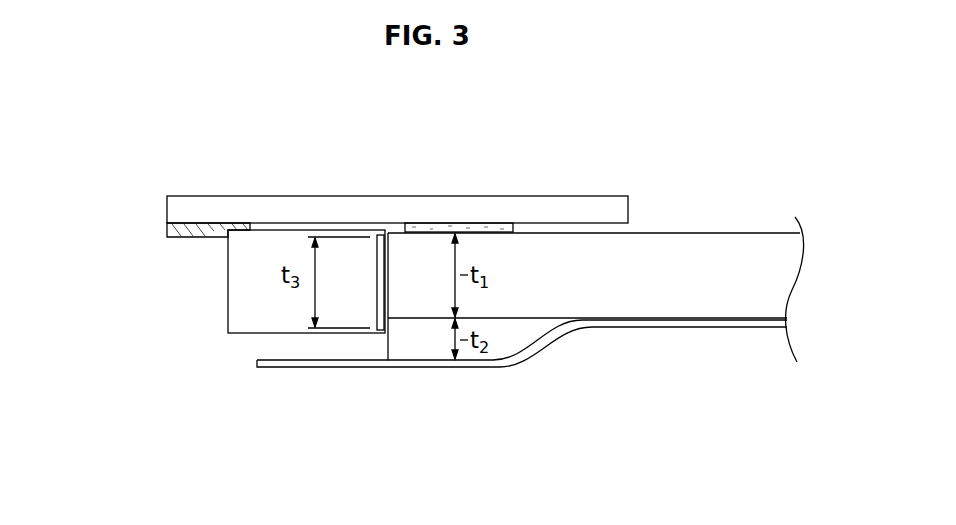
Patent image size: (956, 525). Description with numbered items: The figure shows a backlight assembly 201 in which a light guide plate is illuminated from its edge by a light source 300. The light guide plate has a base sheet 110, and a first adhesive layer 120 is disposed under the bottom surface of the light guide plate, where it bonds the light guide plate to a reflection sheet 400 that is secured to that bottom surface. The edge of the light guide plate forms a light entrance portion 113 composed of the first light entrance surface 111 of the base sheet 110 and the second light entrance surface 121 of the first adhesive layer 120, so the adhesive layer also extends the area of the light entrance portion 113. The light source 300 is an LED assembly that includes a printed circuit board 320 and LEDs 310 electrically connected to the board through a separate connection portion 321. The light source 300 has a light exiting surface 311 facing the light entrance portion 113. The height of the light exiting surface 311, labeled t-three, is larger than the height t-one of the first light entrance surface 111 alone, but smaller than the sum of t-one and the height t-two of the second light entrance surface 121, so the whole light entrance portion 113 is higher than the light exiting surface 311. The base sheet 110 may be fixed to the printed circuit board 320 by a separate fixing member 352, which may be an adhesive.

The backlight assembly 201 is at (120, 132).
The light source 300 is at (92, 212).
The printed circuit board 320 is at (178, 209).
The connection portion 321 is at (205, 232).
The LED 310 is at (240, 278).
The light exiting surface 311 is at (380, 297).
The fixing member 352 is at (467, 230).
The base sheet 110 is at (698, 245).
The first light entrance surface 111 is at (388, 305).
The second light entrance surface 121 is at (375, 352).
The light entrance portion 113 is at (382, 426).
The first adhesive layer 120 is at (507, 345).
The reflection sheet 400 is at (595, 322).